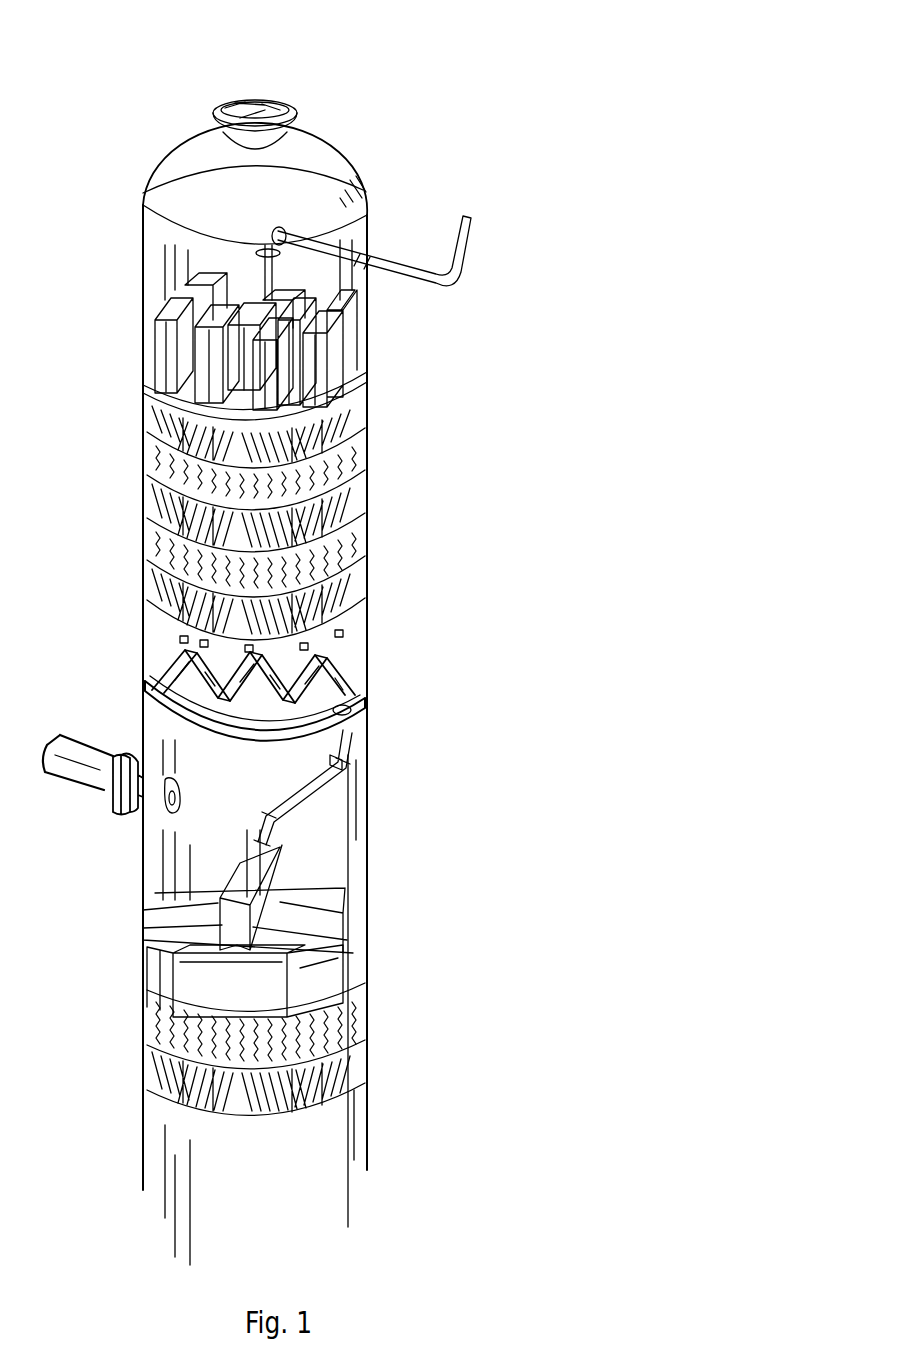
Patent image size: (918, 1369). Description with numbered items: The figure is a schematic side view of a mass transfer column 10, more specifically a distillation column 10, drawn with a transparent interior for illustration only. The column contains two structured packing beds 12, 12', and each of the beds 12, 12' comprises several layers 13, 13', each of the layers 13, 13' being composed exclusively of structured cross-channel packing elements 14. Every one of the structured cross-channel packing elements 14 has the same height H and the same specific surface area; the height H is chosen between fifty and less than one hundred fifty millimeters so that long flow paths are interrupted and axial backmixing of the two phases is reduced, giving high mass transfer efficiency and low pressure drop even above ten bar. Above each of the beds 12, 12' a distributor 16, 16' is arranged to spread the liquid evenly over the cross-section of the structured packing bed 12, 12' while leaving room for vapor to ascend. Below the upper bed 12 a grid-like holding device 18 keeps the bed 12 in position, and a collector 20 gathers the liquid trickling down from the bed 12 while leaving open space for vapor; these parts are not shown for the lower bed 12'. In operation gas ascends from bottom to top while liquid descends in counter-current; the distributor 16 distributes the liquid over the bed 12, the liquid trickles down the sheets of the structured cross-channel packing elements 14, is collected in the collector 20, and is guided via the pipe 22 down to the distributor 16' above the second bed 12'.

The mass transfer column 10 is at (508, 97).
The structured packing bed 12 is at (313, 525).
The structured packing bed 12' is at (327, 1049).
The layer 13 is at (316, 514).
The layer 13' is at (321, 561).
The structured cross-channel packing element 14 is at (177, 453).
The distributor 16 is at (209, 346).
The distributor 16' is at (190, 923).
The grid-like holding device 18 is at (368, 625).
The collector 20 is at (340, 673).
The pipe 22 is at (320, 788).
The height H is at (135, 563).